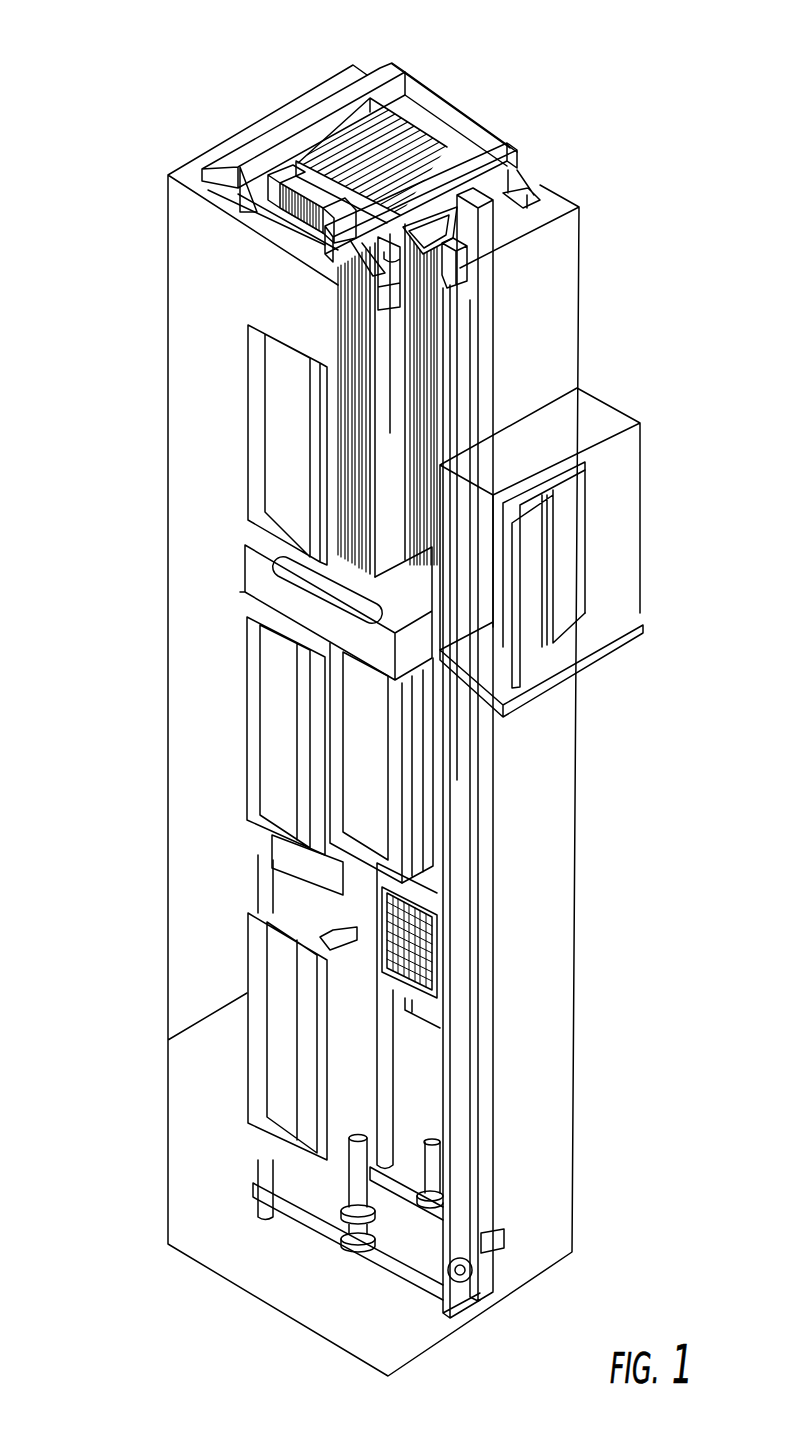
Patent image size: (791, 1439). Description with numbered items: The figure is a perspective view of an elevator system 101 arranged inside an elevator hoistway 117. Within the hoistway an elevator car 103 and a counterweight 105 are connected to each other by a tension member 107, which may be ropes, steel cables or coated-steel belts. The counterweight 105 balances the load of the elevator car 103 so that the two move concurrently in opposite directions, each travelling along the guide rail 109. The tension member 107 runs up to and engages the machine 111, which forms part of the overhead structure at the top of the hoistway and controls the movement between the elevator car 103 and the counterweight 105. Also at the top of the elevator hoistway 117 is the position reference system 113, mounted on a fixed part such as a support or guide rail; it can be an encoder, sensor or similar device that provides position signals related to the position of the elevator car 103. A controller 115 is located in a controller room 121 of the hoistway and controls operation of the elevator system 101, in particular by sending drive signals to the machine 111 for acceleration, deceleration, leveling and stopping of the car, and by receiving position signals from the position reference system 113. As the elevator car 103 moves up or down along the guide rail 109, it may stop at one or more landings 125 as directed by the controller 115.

The elevator system 101 is at (604, 90).
The elevator car 103 is at (372, 763).
The counterweight 105 is at (423, 967).
The tension member 107 is at (376, 431).
The guide rail 109 is at (463, 883).
The machine 111 is at (277, 170).
The position reference system 113 is at (562, 212).
The controller 115 is at (578, 561).
The elevator hoistway 117 is at (224, 886).
The controller room 121 is at (654, 419).
The landings 125 is at (112, 593).